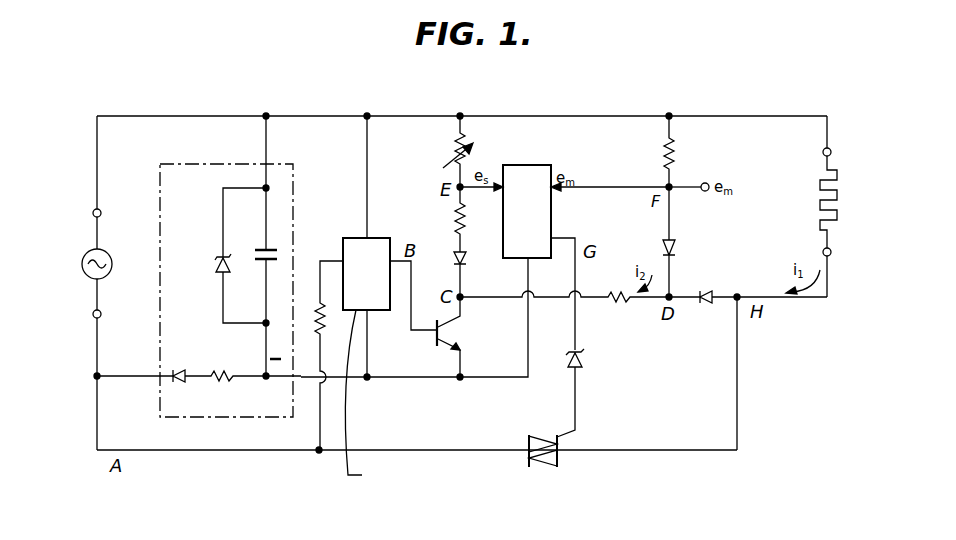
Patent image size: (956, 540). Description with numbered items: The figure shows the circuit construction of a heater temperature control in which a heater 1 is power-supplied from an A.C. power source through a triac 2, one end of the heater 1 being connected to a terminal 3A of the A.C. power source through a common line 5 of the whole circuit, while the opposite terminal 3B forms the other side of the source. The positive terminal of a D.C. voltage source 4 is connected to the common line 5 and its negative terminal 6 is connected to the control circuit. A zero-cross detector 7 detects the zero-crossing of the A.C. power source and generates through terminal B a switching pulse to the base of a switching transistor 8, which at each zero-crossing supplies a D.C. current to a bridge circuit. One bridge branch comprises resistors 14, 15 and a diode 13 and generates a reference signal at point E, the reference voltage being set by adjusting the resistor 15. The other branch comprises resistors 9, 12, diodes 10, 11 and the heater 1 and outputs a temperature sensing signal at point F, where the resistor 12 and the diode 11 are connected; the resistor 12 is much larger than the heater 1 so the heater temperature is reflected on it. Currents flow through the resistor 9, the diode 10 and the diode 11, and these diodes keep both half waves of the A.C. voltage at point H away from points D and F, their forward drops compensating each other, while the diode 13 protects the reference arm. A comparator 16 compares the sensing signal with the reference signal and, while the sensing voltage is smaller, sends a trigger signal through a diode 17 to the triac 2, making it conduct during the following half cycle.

The heater 1 is at (820, 178).
The triac 2 is at (537, 432).
The terminal of the A.C. power source 3A is at (79, 182).
The terminal of the A.C. power source 3B is at (79, 364).
The D.C. voltage source 4 is at (233, 418).
The common line 5 is at (348, 114).
The negative terminal 6 is at (390, 380).
The zero-cross detector 7 is at (353, 247).
The switching transistor 8 is at (440, 341).
The resistor 9 is at (626, 300).
The diode 10 is at (700, 290).
The diode 11 is at (667, 243).
The resistor 12 is at (664, 152).
The diode 13 is at (467, 252).
The resistor 14 is at (455, 215).
The resistor 15 is at (455, 150).
The comparator 16 is at (523, 178).
The diode 17 is at (585, 368).